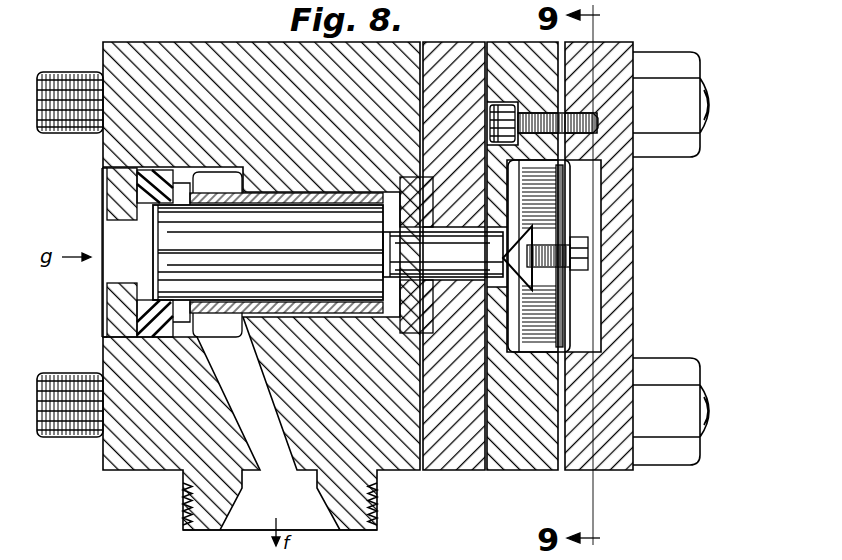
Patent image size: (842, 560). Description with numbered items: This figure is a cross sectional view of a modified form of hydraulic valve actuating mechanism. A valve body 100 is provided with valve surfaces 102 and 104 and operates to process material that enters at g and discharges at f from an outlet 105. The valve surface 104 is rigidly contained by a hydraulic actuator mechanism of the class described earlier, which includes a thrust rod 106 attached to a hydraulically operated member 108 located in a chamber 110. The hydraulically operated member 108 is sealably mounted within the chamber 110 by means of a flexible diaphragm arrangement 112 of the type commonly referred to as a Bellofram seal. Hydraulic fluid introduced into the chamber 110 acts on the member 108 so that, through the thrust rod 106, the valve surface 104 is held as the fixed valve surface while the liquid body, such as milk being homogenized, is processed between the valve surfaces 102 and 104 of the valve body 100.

The valve body 100 is at (138, 462).
The valve surface 102 is at (140, 191).
The valve surface 104 is at (140, 322).
The outlet 105 is at (377, 510).
The thrust rod 106 is at (443, 254).
The hydraulically operated member 108 is at (538, 199).
The chamber 110 is at (578, 300).
The flexible diaphragm arrangement 112 is at (563, 176).